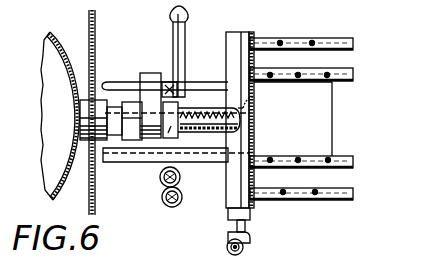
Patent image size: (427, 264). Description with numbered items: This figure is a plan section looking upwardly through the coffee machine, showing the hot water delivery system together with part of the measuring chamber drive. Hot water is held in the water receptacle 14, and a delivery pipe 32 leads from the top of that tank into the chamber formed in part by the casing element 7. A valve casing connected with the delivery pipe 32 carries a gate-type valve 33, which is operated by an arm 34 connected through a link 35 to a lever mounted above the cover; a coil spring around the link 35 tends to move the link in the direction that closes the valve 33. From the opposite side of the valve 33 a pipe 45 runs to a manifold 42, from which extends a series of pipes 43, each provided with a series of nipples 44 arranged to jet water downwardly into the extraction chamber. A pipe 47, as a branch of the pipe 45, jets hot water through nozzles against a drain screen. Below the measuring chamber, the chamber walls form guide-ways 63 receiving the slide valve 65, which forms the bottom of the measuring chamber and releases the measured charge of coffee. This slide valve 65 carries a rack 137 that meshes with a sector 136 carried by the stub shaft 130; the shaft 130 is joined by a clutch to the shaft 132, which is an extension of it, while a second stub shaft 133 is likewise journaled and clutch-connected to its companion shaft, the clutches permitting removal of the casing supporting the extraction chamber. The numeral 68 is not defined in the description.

The chamber element 7 is at (96, 22).
The water receptacle 14 is at (58, 53).
The delivery pipe 32 is at (117, 103).
The valve 33 is at (148, 83).
The arm 34 is at (183, 40).
The link 35 is at (167, 77).
The manifold 42 is at (238, 34).
The pipes 43 is at (353, 73).
The nipples 44 is at (283, 43).
The pipe 45 is at (197, 108).
The pipe 47 is at (248, 246).
The guide-way 63 is at (110, 162).
The slide valve 65 is at (320, 120).
The member 68 is at (309, 259).
The shaft 130 is at (167, 208).
The shaft 132 is at (189, 259).
The shaft 133 is at (182, 181).
The sector 136 is at (168, 142).
The rack 137 is at (254, 97).